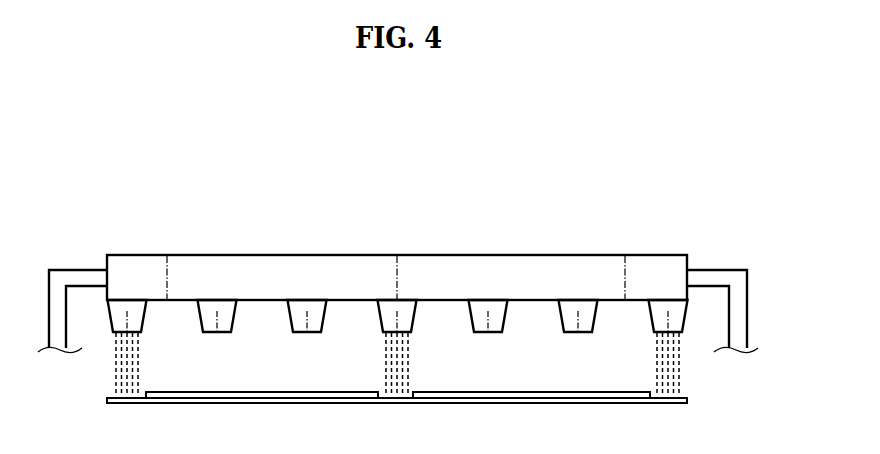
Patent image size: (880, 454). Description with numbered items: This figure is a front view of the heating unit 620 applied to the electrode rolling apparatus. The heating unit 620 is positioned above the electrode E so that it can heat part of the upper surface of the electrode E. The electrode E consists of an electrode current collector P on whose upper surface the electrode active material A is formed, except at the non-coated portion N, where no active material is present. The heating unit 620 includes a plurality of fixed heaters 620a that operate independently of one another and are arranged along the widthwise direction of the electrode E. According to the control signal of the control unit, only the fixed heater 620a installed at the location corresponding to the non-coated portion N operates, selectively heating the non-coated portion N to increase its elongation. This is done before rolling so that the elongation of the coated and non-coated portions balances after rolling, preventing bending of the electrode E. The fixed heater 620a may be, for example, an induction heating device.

The heating unit 620 is at (172, 173).
The fixed heater 620a is at (217, 333).
The electrode active material A is at (260, 392).
The non-coated portion N is at (413, 395).
The electrode current collector P is at (688, 400).
The electrode E is at (96, 406).